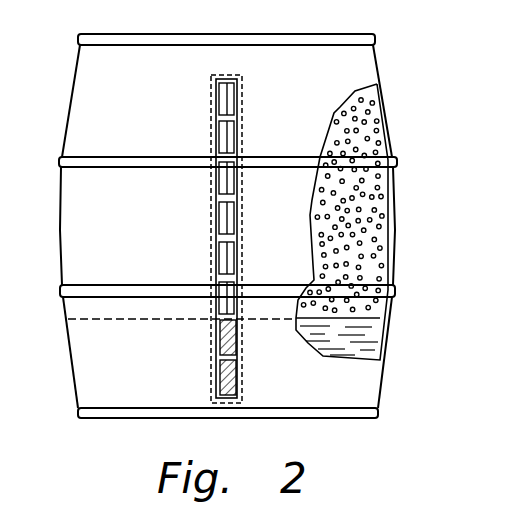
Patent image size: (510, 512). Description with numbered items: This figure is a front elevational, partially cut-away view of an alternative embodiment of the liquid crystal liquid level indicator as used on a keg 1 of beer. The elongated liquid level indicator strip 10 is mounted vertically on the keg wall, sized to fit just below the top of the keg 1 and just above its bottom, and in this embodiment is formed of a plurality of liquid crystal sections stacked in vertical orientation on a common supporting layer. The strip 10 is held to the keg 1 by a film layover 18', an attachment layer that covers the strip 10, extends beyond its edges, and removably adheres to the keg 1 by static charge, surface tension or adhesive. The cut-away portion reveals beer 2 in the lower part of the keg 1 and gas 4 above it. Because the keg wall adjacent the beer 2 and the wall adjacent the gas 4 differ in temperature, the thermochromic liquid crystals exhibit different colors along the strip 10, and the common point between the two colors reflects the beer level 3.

The keg 1 is at (137, 250).
The beer 2 is at (358, 341).
The beer level 3 is at (377, 315).
The gas 4 is at (375, 195).
The liquid crystal liquid level indicator strip 10 is at (217, 118).
The film layover 18' is at (131, 217).